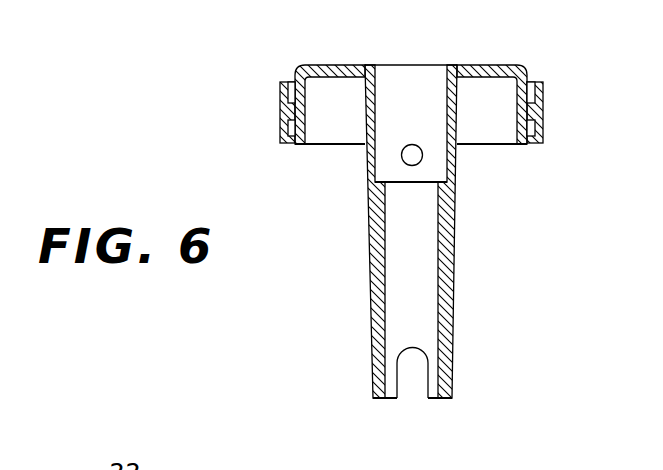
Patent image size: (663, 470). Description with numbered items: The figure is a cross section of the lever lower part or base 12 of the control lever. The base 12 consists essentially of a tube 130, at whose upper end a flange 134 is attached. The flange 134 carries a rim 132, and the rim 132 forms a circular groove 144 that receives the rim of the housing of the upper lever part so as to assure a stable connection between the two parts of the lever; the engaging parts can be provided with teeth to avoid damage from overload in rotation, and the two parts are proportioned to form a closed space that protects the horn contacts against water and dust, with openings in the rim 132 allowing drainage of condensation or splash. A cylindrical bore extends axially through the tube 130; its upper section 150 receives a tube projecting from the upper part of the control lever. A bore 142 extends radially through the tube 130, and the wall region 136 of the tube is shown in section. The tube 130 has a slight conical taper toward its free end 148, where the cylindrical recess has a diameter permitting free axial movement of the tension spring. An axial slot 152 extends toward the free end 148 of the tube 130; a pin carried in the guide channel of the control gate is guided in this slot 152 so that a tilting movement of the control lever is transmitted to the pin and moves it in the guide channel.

The lever lower part or base 12 is at (568, 66).
The tube 130 is at (453, 306).
The rim 132 is at (535, 118).
The flange 134 is at (480, 68).
The bore wall 136 is at (447, 88).
The bore 142 is at (422, 158).
The circular groove 144 is at (280, 95).
The free end 148 is at (452, 398).
The upper section 150 is at (365, 118).
The axial slot 152 is at (412, 387).